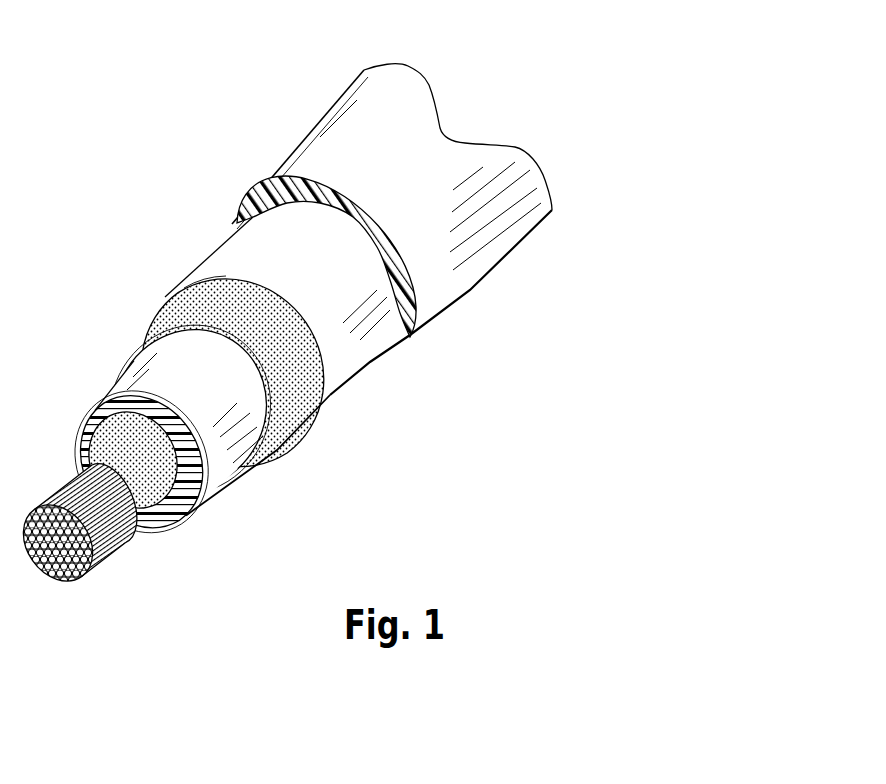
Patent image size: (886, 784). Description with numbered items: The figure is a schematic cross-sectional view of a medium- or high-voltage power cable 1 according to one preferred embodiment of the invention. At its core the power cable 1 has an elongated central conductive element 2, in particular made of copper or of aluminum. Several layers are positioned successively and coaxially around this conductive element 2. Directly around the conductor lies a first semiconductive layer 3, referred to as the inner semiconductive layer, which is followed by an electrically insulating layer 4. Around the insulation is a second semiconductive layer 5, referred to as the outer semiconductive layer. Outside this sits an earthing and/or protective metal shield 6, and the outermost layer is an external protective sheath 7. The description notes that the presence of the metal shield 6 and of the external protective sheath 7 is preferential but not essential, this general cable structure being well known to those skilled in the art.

The power cable 1 is at (166, 194).
The central conductive element 2 is at (106, 530).
The first semiconductive layer 3 is at (180, 520).
The electrically insulating layer 4 is at (212, 441).
The second semiconductive layer 5 is at (287, 372).
The metal shield 6 is at (343, 323).
The external protective sheath 7 is at (427, 242).